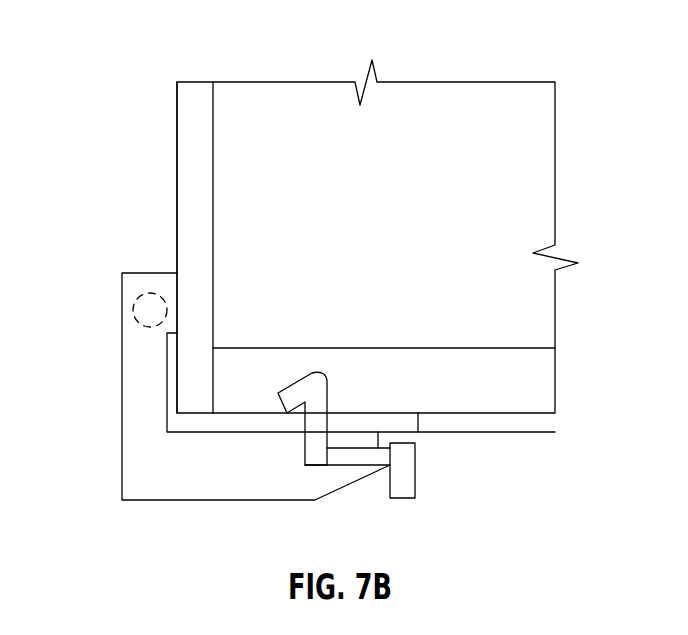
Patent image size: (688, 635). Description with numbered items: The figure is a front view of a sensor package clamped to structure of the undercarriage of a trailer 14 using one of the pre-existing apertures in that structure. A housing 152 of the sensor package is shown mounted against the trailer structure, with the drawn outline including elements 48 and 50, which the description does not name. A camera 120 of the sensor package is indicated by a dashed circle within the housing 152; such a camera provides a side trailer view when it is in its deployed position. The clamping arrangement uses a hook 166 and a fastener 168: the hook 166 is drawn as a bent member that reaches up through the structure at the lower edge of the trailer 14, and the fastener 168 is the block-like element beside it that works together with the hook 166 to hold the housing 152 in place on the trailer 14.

The trailer 14 is at (537, 45).
The panel 48 is at (412, 103).
The side wall 50 is at (177, 182).
The camera 120 is at (134, 306).
The housing 152 is at (122, 460).
The hook 166 is at (322, 373).
The fastener 168 is at (343, 457).